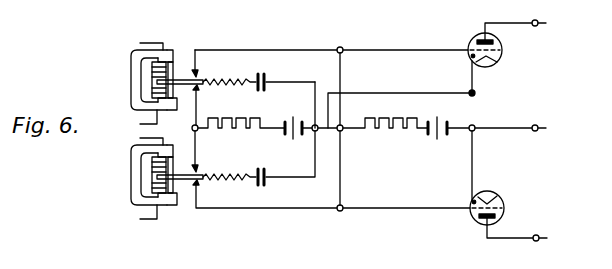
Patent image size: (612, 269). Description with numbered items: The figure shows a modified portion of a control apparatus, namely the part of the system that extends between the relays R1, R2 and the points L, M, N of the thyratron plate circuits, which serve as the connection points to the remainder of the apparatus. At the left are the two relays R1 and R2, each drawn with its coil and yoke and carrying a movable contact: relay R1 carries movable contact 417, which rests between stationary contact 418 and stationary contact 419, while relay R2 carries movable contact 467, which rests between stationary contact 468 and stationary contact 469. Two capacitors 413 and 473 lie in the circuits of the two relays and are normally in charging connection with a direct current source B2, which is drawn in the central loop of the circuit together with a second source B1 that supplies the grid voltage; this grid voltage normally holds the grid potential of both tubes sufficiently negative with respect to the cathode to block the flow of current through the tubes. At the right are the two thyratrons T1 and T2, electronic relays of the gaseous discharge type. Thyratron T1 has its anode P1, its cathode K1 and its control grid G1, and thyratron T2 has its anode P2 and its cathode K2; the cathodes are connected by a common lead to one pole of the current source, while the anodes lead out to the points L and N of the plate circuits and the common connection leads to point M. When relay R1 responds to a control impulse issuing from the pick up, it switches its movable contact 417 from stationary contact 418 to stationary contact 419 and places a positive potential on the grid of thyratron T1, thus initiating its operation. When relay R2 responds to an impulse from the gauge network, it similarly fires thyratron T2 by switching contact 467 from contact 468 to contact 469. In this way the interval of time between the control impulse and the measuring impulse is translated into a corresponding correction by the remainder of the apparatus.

The movable contact 467 is at (180, 79).
The stationary contact 469 is at (199, 73).
The stationary contact 468 is at (200, 91).
The capacitor 473 is at (268, 80).
The stationary contact 418 is at (199, 168).
The stationary contact 419 is at (200, 186).
The movable contact 417 is at (182, 181).
The capacitor 413 is at (268, 186).
The relay R2 is at (118, 85).
The relay R1 is at (118, 182).
The direct current source B2 is at (290, 138).
The source of grid voltage B1 is at (444, 138).
The thyratron T2 is at (489, 47).
The thyratron T1 is at (510, 210).
The anode P2 is at (497, 44).
The cathode K2 is at (497, 63).
The cathode K1 is at (503, 200).
The control grid G1 is at (502, 206).
The anode P1 is at (498, 217).
The point of thyratron plate circuit L is at (545, 24).
The point of thyratron plate circuit M is at (518, 129).
The point of thyratron plate circuit N is at (548, 240).